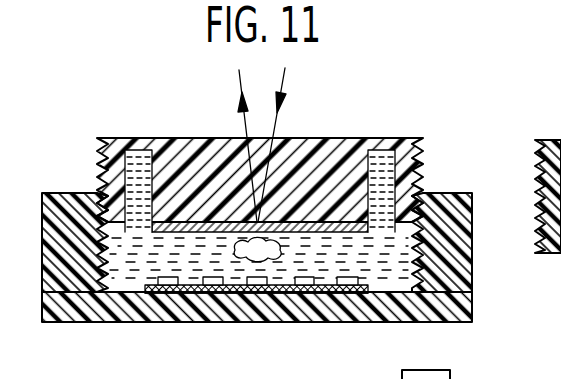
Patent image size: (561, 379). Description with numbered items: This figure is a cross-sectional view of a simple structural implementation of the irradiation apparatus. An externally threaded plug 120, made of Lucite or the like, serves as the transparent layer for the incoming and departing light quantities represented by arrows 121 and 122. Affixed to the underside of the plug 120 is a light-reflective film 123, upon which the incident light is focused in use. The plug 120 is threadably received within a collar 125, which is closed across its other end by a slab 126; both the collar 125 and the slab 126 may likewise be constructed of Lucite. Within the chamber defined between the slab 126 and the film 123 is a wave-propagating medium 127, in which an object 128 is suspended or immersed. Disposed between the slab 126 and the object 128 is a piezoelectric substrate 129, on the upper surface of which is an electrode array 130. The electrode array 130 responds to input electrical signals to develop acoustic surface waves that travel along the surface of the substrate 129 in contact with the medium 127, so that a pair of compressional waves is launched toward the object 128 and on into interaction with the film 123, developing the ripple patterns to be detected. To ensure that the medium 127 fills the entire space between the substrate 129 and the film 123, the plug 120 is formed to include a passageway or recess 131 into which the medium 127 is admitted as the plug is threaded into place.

The externally threaded plug 120 is at (313, 137).
The incoming light quantity 121 is at (280, 82).
The departing light quantity 122 is at (238, 82).
The light-reflective film 123 is at (207, 222).
The collar 125 is at (473, 262).
The slab 126 is at (473, 313).
The wave-propagating medium 127 is at (388, 268).
The object 128 is at (282, 296).
The piezoelectric substrate 129 is at (172, 296).
The electrode array 130 is at (176, 270).
The passageway or recess 131 is at (130, 183).